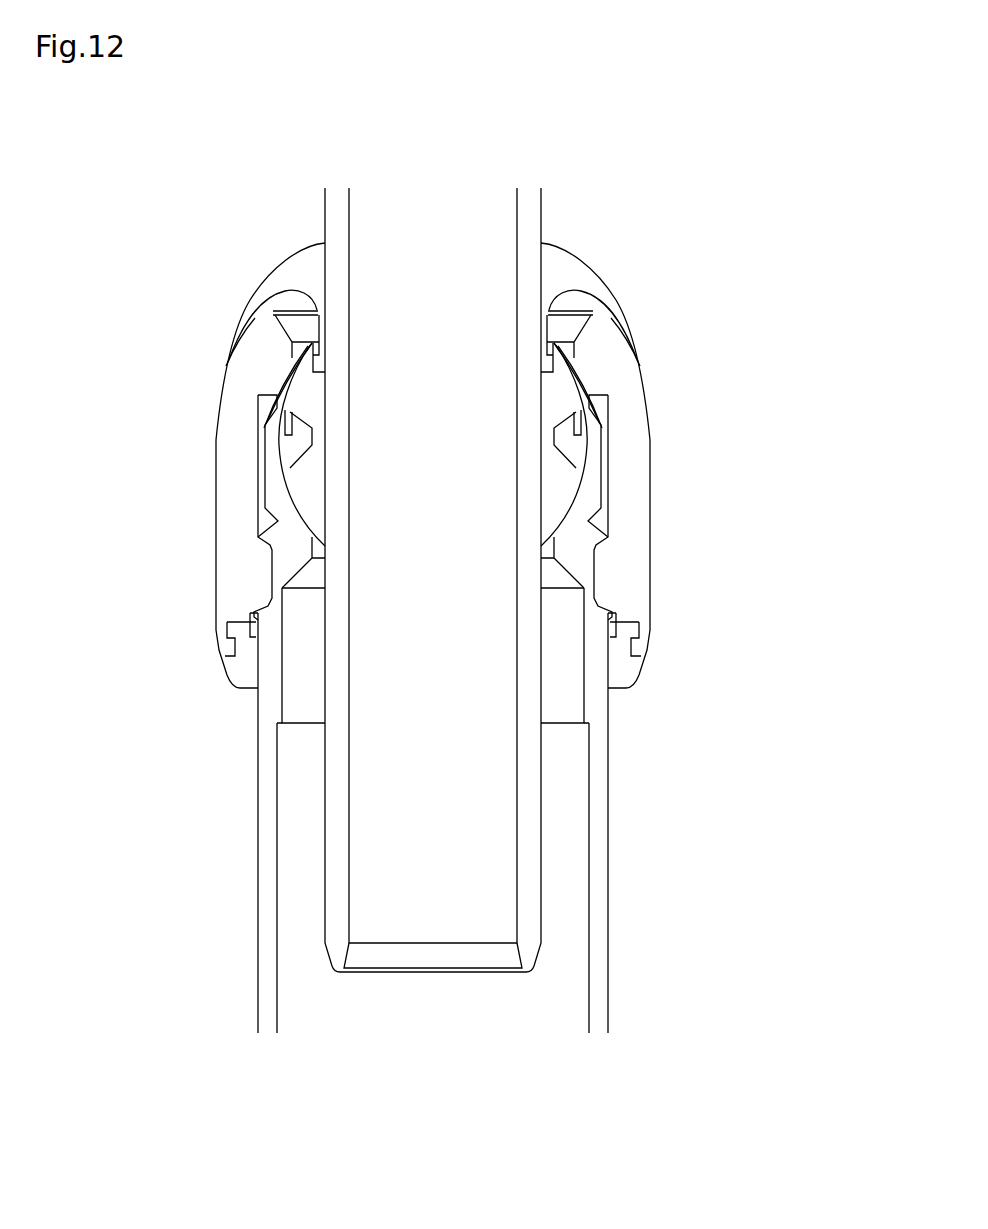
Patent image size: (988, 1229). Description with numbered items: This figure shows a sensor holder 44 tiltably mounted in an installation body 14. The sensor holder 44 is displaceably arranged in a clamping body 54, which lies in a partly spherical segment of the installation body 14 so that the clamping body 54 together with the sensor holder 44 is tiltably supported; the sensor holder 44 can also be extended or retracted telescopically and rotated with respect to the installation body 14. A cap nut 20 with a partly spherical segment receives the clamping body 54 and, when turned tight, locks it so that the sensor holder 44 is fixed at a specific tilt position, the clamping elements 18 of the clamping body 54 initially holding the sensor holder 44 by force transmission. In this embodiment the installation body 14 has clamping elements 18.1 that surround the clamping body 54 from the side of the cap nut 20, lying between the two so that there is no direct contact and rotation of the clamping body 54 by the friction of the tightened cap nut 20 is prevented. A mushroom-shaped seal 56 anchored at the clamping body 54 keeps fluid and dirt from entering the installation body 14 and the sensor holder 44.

The installation body 14 is at (598, 830).
The clamping elements 18 is at (555, 498).
The clamping elements 18.1 is at (575, 365).
The cap nut 20 is at (638, 478).
The sensor holder 44 is at (533, 220).
The clamping body 54 is at (563, 380).
The mushroom-shaped seal 56 is at (583, 280).